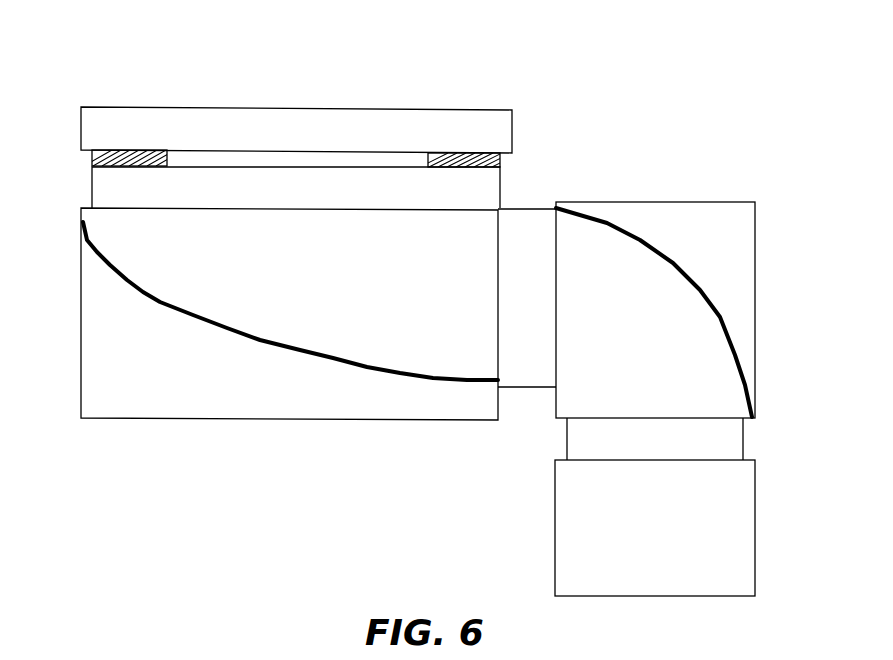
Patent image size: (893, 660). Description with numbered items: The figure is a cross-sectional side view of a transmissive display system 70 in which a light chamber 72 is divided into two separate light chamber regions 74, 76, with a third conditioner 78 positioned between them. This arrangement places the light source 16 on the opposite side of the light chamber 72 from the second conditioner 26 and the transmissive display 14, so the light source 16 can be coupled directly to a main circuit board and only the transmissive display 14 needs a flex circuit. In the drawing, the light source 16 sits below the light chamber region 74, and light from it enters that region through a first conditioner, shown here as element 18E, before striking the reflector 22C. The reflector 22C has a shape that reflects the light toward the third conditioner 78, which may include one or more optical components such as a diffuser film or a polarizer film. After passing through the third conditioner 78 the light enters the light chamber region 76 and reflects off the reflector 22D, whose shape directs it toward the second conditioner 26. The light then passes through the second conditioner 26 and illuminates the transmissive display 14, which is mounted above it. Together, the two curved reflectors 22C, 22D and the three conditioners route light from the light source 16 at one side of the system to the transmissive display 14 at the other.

The transmissive display system 70 is at (452, 74).
The transmissive display 14 is at (81, 135).
The second conditioner 26 is at (92, 197).
The light chamber region 76 is at (81, 320).
The reflector 22D is at (243, 337).
The third conditioner 78 is at (530, 387).
The light chamber 72 is at (555, 400).
The light chamber region 74 is at (755, 295).
The reflector 22C is at (680, 273).
The light coupler 18E is at (743, 439).
The light source 16 is at (755, 545).